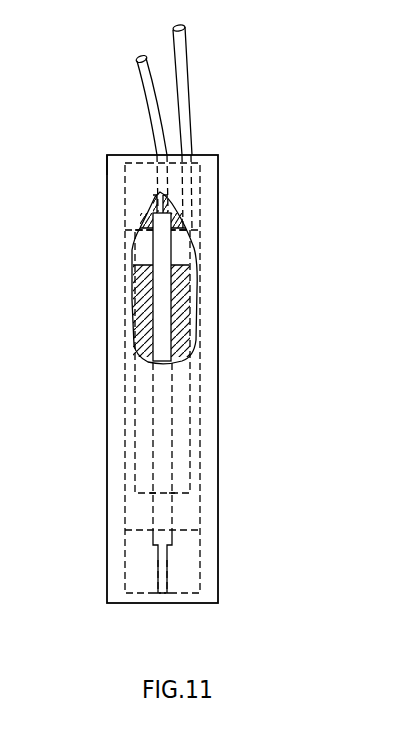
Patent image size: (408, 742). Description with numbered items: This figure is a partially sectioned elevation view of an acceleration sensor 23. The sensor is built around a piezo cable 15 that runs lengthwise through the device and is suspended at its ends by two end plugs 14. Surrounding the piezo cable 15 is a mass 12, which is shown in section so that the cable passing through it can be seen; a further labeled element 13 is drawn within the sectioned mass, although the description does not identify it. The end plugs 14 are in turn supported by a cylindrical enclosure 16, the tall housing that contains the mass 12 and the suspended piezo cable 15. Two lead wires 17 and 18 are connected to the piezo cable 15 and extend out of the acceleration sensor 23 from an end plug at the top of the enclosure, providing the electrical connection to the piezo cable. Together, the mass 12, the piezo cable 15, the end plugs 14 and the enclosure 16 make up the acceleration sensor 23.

The mass 12 is at (190, 313).
The core member 13 is at (163, 275).
The end plugs 14 is at (150, 592).
The piezo cable 15 is at (199, 188).
The cylindrical enclosure 16 is at (219, 552).
The lead wire 17 is at (190, 50).
The lead wire 18 is at (143, 87).
The acceleration sensor 23 is at (107, 155).